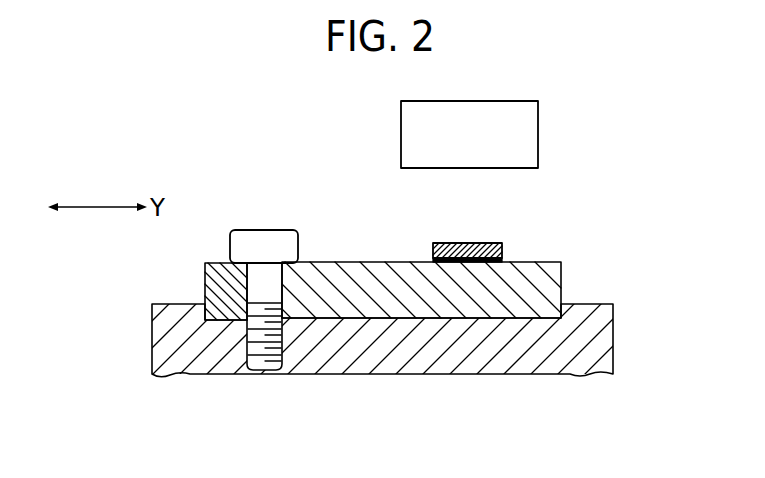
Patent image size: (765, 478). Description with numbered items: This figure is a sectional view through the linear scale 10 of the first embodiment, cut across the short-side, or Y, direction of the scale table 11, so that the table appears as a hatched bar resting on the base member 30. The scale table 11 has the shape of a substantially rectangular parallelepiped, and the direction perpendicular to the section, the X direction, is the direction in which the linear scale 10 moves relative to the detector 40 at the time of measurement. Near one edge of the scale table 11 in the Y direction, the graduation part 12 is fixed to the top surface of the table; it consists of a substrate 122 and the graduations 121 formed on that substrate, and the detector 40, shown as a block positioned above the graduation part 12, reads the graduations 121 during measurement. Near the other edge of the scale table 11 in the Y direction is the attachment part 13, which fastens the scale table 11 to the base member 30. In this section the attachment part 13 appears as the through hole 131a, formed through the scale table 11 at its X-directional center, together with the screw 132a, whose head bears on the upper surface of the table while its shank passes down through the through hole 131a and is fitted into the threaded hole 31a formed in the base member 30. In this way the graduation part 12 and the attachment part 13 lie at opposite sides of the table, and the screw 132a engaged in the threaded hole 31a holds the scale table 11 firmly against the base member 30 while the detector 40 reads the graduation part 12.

The linear scale 10 is at (454, 248).
The scale table 11 is at (552, 290).
The graduation part 12 is at (527, 223).
The graduations 121 is at (503, 258).
The substrate 122 is at (503, 243).
The attachment part 13 is at (201, 227).
The through hole 131a is at (243, 272).
The screw 132a is at (265, 237).
The base member 30 is at (598, 345).
The threaded hole 31a is at (263, 357).
The detector 40 is at (530, 120).